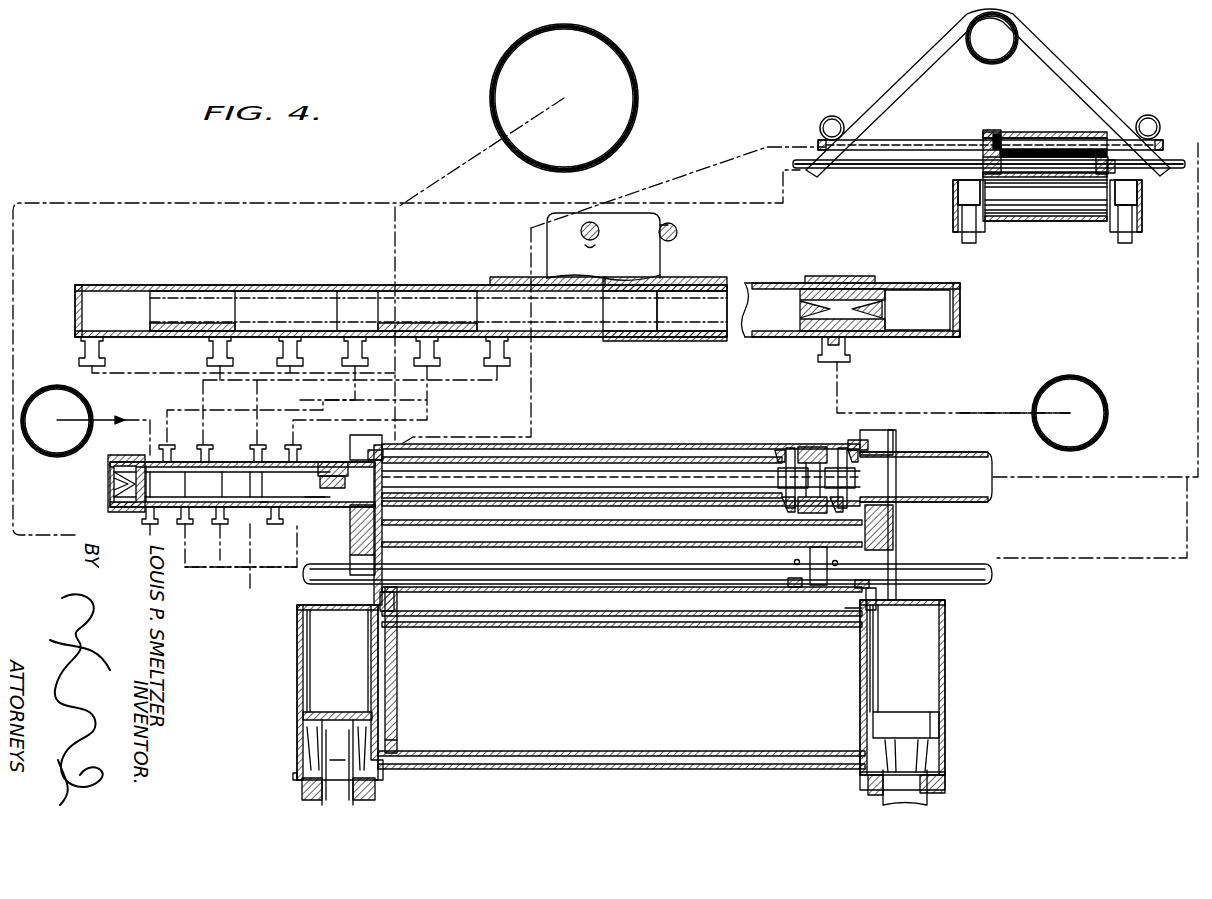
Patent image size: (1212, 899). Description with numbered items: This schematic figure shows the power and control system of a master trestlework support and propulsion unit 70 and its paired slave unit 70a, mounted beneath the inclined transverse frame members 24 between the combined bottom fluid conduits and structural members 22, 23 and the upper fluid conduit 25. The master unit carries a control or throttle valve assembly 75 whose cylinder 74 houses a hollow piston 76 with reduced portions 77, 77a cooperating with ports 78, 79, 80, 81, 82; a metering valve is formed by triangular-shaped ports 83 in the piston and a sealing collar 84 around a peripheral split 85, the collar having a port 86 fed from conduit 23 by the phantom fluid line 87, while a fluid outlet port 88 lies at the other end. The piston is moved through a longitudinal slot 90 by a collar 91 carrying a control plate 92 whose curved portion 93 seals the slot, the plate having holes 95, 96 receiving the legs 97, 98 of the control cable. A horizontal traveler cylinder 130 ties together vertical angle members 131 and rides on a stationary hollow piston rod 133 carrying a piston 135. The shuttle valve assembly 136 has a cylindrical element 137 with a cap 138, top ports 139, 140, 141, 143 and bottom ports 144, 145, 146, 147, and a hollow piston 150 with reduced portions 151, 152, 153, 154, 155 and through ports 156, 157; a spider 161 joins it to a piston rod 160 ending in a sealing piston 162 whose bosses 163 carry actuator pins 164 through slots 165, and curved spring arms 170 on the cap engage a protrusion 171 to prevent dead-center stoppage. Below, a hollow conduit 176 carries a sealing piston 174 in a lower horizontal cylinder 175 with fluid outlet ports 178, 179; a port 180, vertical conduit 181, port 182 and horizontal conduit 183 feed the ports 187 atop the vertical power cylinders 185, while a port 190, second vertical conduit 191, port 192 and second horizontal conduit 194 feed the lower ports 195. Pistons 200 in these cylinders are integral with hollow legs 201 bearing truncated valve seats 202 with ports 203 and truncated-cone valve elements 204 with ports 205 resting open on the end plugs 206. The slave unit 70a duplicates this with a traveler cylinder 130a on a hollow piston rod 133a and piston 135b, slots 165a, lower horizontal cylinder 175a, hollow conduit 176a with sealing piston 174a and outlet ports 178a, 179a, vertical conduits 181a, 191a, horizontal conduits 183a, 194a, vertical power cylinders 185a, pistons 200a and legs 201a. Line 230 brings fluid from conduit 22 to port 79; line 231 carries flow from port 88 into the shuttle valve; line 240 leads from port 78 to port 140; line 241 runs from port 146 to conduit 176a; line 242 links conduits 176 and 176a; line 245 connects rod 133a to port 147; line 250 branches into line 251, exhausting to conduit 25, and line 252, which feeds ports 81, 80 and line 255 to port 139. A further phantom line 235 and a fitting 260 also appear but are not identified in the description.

The combined bottom fluid conduit and structural member 22 is at (57, 390).
The combined bottom fluid conduit and structural member 23 is at (1100, 392).
The inclined transverse frame member 24 is at (915, 68).
The upper fluid conduit 25 is at (640, 99).
The master trestlework support and propulsion unit 70 is at (252, 268).
The slave trestlework support and propulsion unit 70a is at (1068, 99).
The cylinder 74 is at (932, 331).
The control or throttle valve assembly 75 is at (965, 300).
The hollow piston 76 is at (704, 303).
The reduced diameter portion 77 is at (422, 298).
The reduced diameter portion 77a is at (298, 300).
The port 78 is at (484, 340).
The port 79 is at (420, 350).
The port 80 is at (342, 340).
The port 81 is at (277, 340).
The port 82 is at (207, 340).
The triangular-shaped port 83 is at (800, 300).
The sealing collar 84 is at (845, 277).
The peripheral split 85 is at (825, 276).
The port 86 is at (822, 352).
The fluid line 87 is at (990, 413).
The fluid outlet port 88 is at (79, 345).
The longitudinal slot 90 is at (700, 281).
The collar 91 is at (622, 341).
The control plate 92 is at (603, 246).
The curved portion 93 is at (492, 277).
The hole 95 is at (680, 227).
The hole 96 is at (581, 232).
The control cable leg 97 is at (677, 238).
The control cable leg 98 is at (590, 242).
The horizontal traveler cylinder 130 is at (625, 444).
The horizontal traveler cylinder 130a is at (1075, 129).
The vertical angle member 131 is at (350, 543).
The stationary hollow piston rod 133 is at (562, 444).
The hollow piston rod 133a is at (905, 139).
The piston 135 is at (794, 562).
The pin 135b is at (996, 134).
The shuttle valve assembly 136 is at (248, 522).
The cylindrical element 137 is at (250, 524).
The cap 138 is at (110, 492).
The port 139 is at (165, 455).
The port 140 is at (204, 455).
The port 141 is at (254, 455).
The port 143 is at (292, 455).
The port 144 is at (148, 512).
The port 145 is at (184, 526).
The port 146 is at (221, 526).
The port 147 is at (276, 518).
The hollow piston 150 is at (247, 524).
The reduced diameter portion 151 is at (168, 484).
The reduced diameter portion 152 is at (205, 484).
The reduced diameter portion 153 is at (242, 484).
The reduced diameter portion 154 is at (282, 484).
The reduced diameter portion 155 is at (318, 500).
The port 156 is at (263, 508).
The port 157 is at (327, 488).
The piston rod 160 is at (666, 471).
The spider 161 is at (323, 462).
The sealing piston 162 is at (803, 462).
The boss 163 is at (855, 488).
The actuator pin 164 is at (792, 448).
The slot 165 is at (840, 445).
The nut 165a is at (987, 134).
The curved spring arm 170 is at (114, 474).
The protrusion 171 is at (150, 462).
The sealing piston 174 is at (818, 585).
The sealing piston 174a is at (1032, 192).
The lower horizontal cylinder 175 is at (640, 545).
The lower horizontal cylinder 175a is at (1040, 187).
The hollow conduit 176 is at (568, 570).
The hollow conduit 176a is at (868, 170).
The fluid outlet port 178 is at (788, 585).
The bracket 178a is at (983, 173).
The fluid outlet port 179 is at (838, 566).
The pin 179a is at (1003, 181).
The port 180 is at (870, 583).
The vertical conduit 181 is at (877, 605).
The vertical conduit 181a is at (1115, 172).
The port 182 is at (852, 613).
The horizontal conduit 183 is at (665, 622).
The horizontal conduit 183a is at (1080, 188).
The vertical power cylinder 185 is at (297, 692).
The vertical power cylinder 185a is at (953, 222).
The port 187 is at (370, 625).
The port 190 is at (397, 604).
The second vertical conduit 191 is at (399, 660).
The vertical conduit 191a is at (993, 222).
The port 192 is at (398, 740).
The second horizontal conduit 194 is at (515, 757).
The horizontal conduit 194a is at (1095, 222).
The port 195 is at (383, 767).
The piston 200 is at (348, 705).
The piston 200a is at (956, 204).
The hollow piston rod or leg 201 is at (320, 797).
The leg 201a is at (968, 243).
The truncated valve seat portion 202 is at (303, 782).
The port 203 is at (365, 760).
The valve element 204 is at (302, 765).
The port 205 is at (386, 780).
The end plug 206 is at (375, 793).
The line 230 is at (150, 420).
The line 231 is at (172, 374).
The center line 235 is at (1110, 480).
The line 240 is at (203, 396).
The line 241 is at (318, 203).
The line 242 is at (1165, 558).
The line 245 is at (722, 163).
The line 250 is at (427, 401).
The line 251 is at (395, 250).
The line 252 is at (290, 373).
The line 255 is at (325, 400).
The collar 260 is at (868, 440).